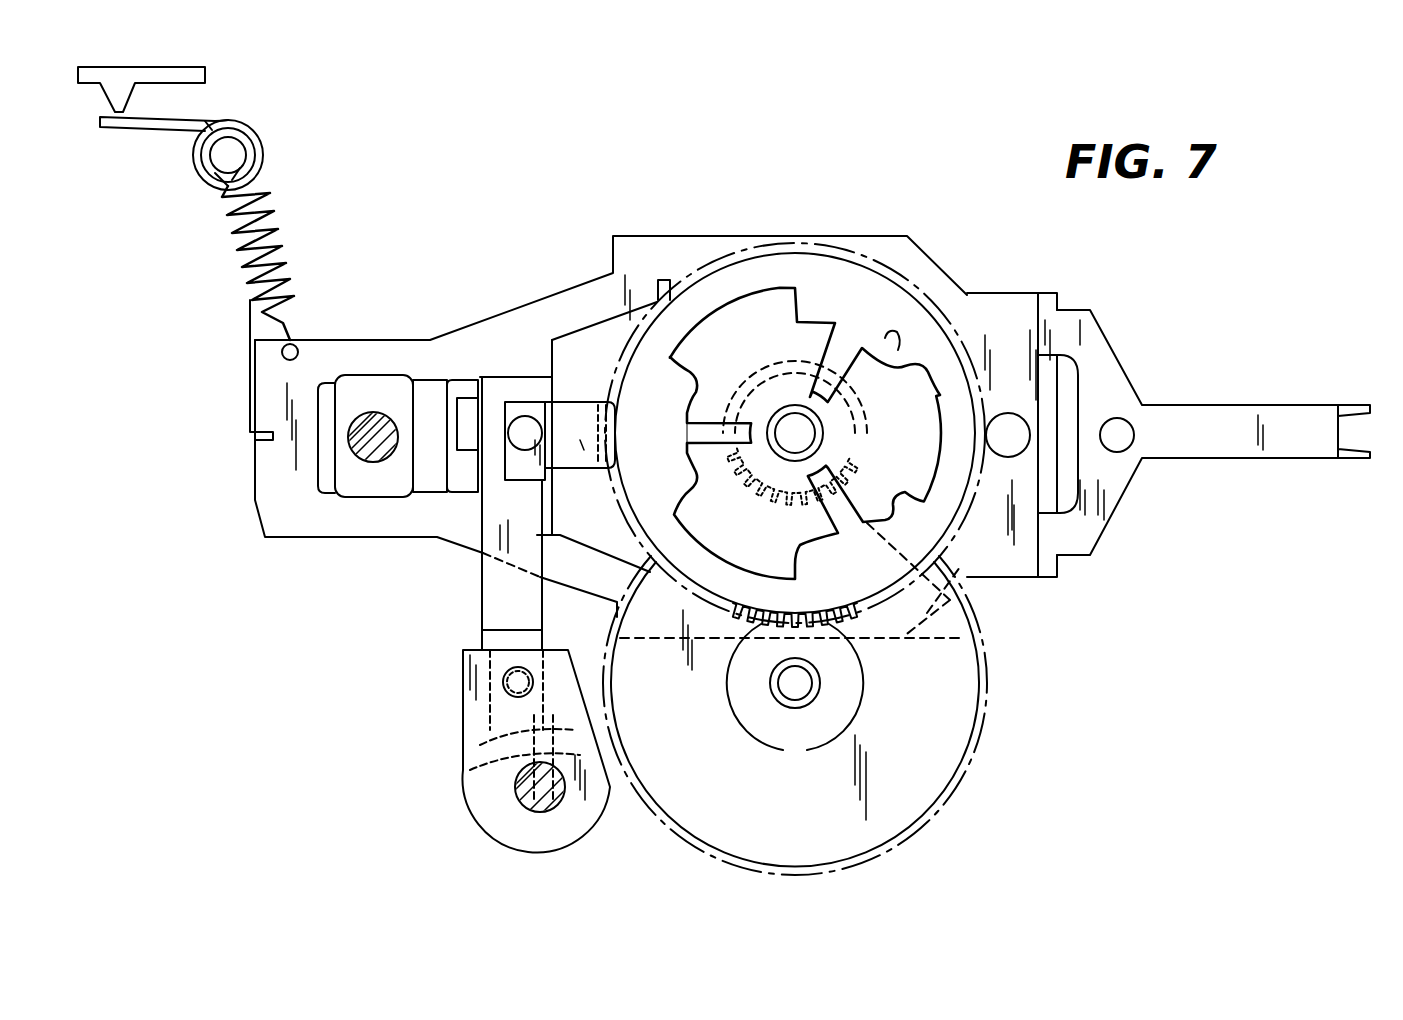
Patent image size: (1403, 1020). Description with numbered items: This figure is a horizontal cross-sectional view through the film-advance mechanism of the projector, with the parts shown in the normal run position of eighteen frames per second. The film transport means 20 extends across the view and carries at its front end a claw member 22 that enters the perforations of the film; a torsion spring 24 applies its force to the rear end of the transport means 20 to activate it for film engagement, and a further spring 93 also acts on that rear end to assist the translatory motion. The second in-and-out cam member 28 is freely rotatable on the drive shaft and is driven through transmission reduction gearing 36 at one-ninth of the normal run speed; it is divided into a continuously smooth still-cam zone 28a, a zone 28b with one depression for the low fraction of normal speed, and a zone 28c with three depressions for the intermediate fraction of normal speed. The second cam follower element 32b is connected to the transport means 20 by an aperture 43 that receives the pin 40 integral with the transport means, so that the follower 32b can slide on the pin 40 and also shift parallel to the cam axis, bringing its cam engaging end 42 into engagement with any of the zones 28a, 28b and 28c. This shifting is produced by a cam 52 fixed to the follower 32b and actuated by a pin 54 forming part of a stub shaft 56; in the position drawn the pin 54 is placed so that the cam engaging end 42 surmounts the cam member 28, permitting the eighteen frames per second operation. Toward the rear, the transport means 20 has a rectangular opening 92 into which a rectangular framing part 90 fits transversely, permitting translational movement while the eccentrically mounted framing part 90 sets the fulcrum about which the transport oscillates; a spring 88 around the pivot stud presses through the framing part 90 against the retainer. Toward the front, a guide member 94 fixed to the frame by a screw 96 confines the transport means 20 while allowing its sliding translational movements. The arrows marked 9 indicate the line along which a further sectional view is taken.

The film transport means 20 is at (1138, 395).
The claw member 22 is at (1348, 405).
The torsion spring 24 is at (160, 140).
The second in-and-out cam member 28 is at (835, 268).
The still cam zone 28a is at (900, 298).
The low-speed cam zone 28b is at (665, 408).
The intermediate-speed cam zone 28c is at (687, 463).
The second cam follower element 32b is at (510, 593).
The transmission reduction gearing 36 is at (865, 482).
The pin 40 is at (525, 425).
The cam engaging end 42 is at (605, 460).
The aperture 43 is at (535, 410).
The cam 52 is at (475, 727).
The pin 54 is at (468, 765).
The stub shaft 56 is at (515, 800).
The spring 88 is at (373, 440).
The framing part 90 is at (383, 388).
The opening 92 is at (325, 385).
The spring 93 is at (283, 232).
The guide member 94 is at (1020, 305).
The screw 96 is at (990, 447).
The section line 9- 9 is at (427, 890).